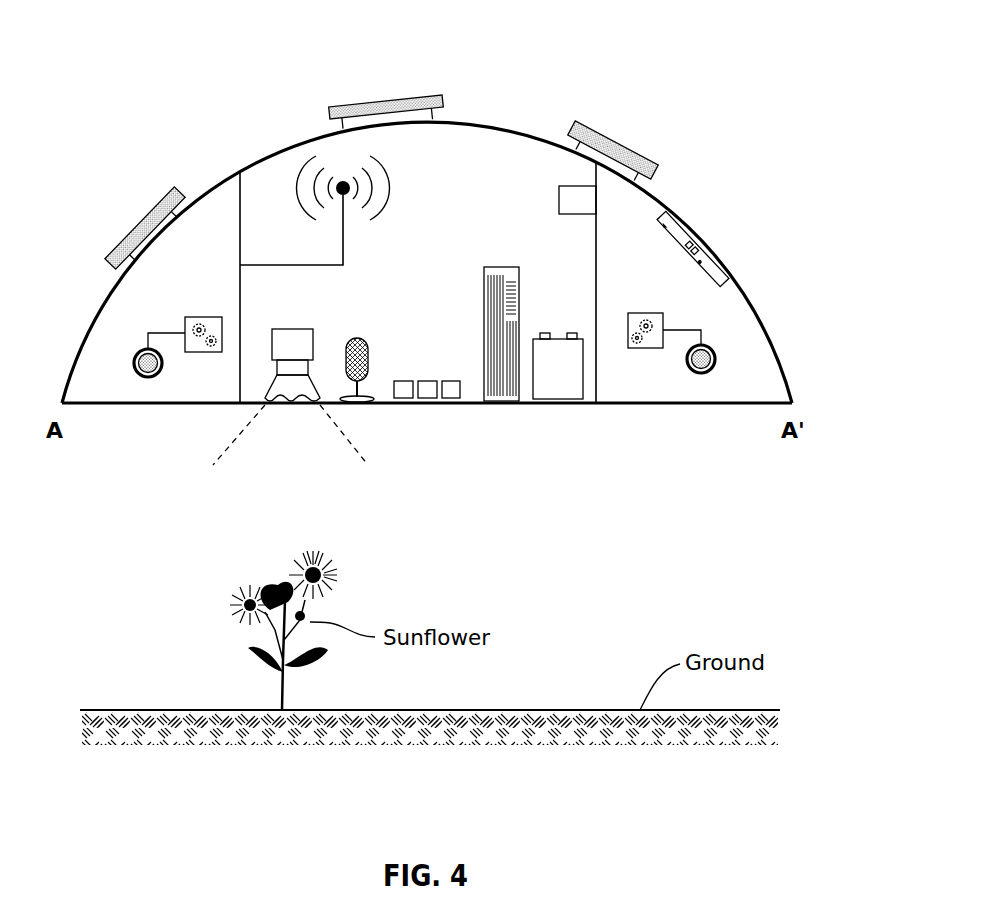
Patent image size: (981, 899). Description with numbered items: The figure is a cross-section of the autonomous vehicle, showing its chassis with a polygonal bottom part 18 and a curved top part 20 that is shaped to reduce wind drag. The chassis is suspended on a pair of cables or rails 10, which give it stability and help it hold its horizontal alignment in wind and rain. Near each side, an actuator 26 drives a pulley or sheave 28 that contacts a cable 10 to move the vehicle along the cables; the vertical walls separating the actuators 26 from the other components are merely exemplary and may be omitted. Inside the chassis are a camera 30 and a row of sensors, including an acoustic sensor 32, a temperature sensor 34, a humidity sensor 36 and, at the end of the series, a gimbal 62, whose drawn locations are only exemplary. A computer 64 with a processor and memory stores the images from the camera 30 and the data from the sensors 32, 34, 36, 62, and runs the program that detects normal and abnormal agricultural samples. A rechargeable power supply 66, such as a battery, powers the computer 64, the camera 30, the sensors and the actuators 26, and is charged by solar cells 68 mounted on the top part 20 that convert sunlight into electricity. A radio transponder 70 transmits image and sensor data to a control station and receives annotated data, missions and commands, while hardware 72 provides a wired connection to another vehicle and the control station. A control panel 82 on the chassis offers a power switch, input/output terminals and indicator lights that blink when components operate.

The cables or rails 10 is at (148, 378).
The bottom part 18 is at (645, 412).
The top part 20 is at (515, 122).
The actuator 26 is at (203, 317).
The pulleys/sheaves 28 is at (133, 363).
The camera 30 is at (290, 329).
The acoustic sensor 32 is at (358, 338).
The temperature sensor 34 is at (464, 426).
The humidity sensor 36 is at (427, 389).
The gimbal 62 is at (427, 389).
The computer 64 is at (493, 267).
The rechargeable power supply 66 is at (571, 378).
The solar cell 68 is at (142, 218).
The radio transponder 70 is at (343, 250).
The hardware 72 is at (559, 200).
The control panel 82 is at (706, 249).